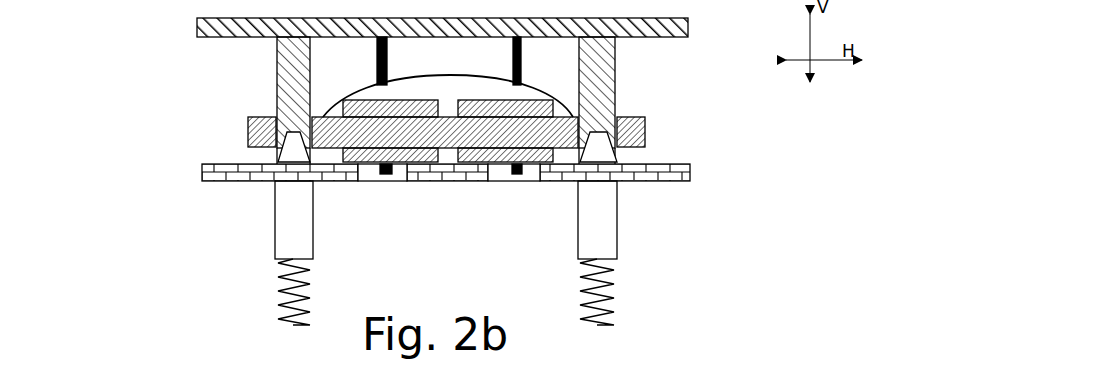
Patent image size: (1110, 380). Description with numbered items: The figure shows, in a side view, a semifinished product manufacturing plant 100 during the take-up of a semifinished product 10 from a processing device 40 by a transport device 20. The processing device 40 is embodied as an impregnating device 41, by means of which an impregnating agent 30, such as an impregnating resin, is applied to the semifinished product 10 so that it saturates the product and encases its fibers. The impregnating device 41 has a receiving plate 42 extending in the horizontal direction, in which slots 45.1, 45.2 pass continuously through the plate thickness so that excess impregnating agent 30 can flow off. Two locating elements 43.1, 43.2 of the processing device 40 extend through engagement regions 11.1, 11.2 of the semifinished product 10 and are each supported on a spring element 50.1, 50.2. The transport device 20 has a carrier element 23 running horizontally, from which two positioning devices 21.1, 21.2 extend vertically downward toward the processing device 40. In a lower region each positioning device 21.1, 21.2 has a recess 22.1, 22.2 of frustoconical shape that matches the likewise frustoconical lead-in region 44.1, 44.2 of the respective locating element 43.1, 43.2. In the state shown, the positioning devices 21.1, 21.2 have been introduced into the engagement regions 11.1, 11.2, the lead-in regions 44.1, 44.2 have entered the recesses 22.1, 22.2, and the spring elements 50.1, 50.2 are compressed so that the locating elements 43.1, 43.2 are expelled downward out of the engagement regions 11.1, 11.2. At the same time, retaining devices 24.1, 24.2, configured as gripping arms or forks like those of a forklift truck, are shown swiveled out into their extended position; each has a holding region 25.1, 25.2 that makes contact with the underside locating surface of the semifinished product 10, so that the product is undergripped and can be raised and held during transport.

The semifinished product manufacturing plant 100 is at (122, 121).
The transport device 20 is at (202, 83).
The carrier element 23 is at (690, 22).
The positioning device 21.1 is at (617, 58).
The positioning device 21.2 is at (278, 55).
The retaining device 24.1 is at (521, 53).
The retaining device 24.2 is at (377, 59).
The recess 22.1 is at (615, 163).
The recess 22.2 is at (278, 161).
The semifinished product 10 is at (645, 128).
The impregnating agent 30 is at (444, 82).
The engagement region 11.1 is at (621, 117).
The engagement region 11.2 is at (270, 117).
The lead-in region 44.1 is at (602, 150).
The lead-in region 44.2 is at (280, 157).
The processing device 40 is at (197, 177).
The impregnating device 41 is at (426, 217).
The receiving plate 42 is at (690, 172).
The slot 45.1 is at (497, 182).
The slot 45.2 is at (367, 182).
The holding region 25.1 is at (517, 178).
The holding region 25.2 is at (386, 178).
The locating element 43.1 is at (600, 222).
The locating element 43.2 is at (288, 216).
The spring element 50.1 is at (615, 285).
The spring element 50.2 is at (278, 283).